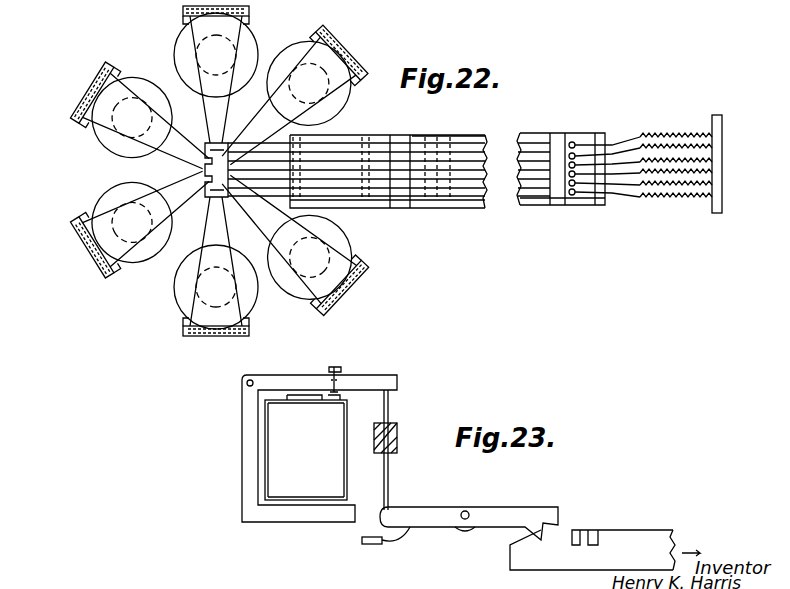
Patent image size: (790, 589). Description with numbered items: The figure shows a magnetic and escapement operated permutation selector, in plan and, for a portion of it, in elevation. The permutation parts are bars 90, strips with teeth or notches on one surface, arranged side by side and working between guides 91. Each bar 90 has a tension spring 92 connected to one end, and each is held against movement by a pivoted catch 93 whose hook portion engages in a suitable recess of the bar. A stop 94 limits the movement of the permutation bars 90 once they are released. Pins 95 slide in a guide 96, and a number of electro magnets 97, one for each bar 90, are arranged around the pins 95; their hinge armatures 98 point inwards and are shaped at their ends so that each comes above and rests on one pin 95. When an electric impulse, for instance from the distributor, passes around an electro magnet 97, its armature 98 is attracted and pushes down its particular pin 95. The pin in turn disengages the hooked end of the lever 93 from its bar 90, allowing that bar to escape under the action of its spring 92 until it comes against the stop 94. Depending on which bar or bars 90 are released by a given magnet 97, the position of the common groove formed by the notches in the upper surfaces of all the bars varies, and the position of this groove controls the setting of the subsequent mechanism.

In FIG. 22, the permutation bars 90 is at (468, 150).
In FIG. 23, the permutation bars 90 is at (632, 540).
In FIG. 22, the guides 91 is at (414, 134).
In FIG. 22, the tension spring 92 is at (675, 135).
In FIG. 22, the pivoted catch 93 is at (375, 160).
In FIG. 23, the pivoted catch 93 is at (515, 515).
In FIG. 22, the stop 94 is at (601, 200).
In FIG. 23, the pins 95 is at (390, 478).
In FIG. 22, the guide 96 is at (202, 196).
In FIG. 23, the guide 96 is at (398, 437).
In FIG. 22, the electro magnets 97 is at (190, 45).
In FIG. 23, the electro magnets 97 is at (290, 427).
In FIG. 22, the hinge armatures 98 is at (330, 60).
In FIG. 23, the hinge armatures 98 is at (300, 380).